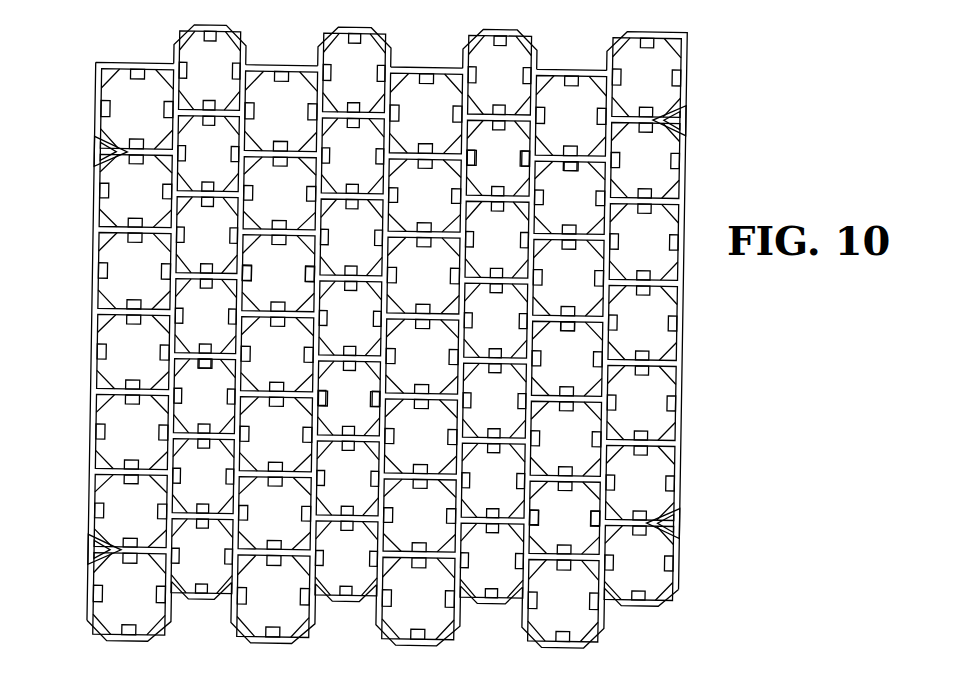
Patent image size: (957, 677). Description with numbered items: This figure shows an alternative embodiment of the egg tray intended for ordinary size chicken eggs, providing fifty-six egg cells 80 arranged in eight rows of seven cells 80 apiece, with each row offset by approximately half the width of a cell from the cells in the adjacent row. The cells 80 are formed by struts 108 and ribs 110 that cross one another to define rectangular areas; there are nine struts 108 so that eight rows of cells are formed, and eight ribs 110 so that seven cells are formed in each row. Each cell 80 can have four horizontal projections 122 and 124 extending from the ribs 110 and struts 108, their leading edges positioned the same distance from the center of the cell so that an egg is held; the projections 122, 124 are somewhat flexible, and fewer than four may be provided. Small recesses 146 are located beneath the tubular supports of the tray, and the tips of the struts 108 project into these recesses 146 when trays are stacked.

The egg cells 80 is at (389, 328).
The struts 108 is at (391, 285).
The ribs 110 is at (300, 166).
The horizontal projections 122 is at (575, 172).
The horizontal projections 124 is at (517, 160).
The recess 146 is at (100, 146).